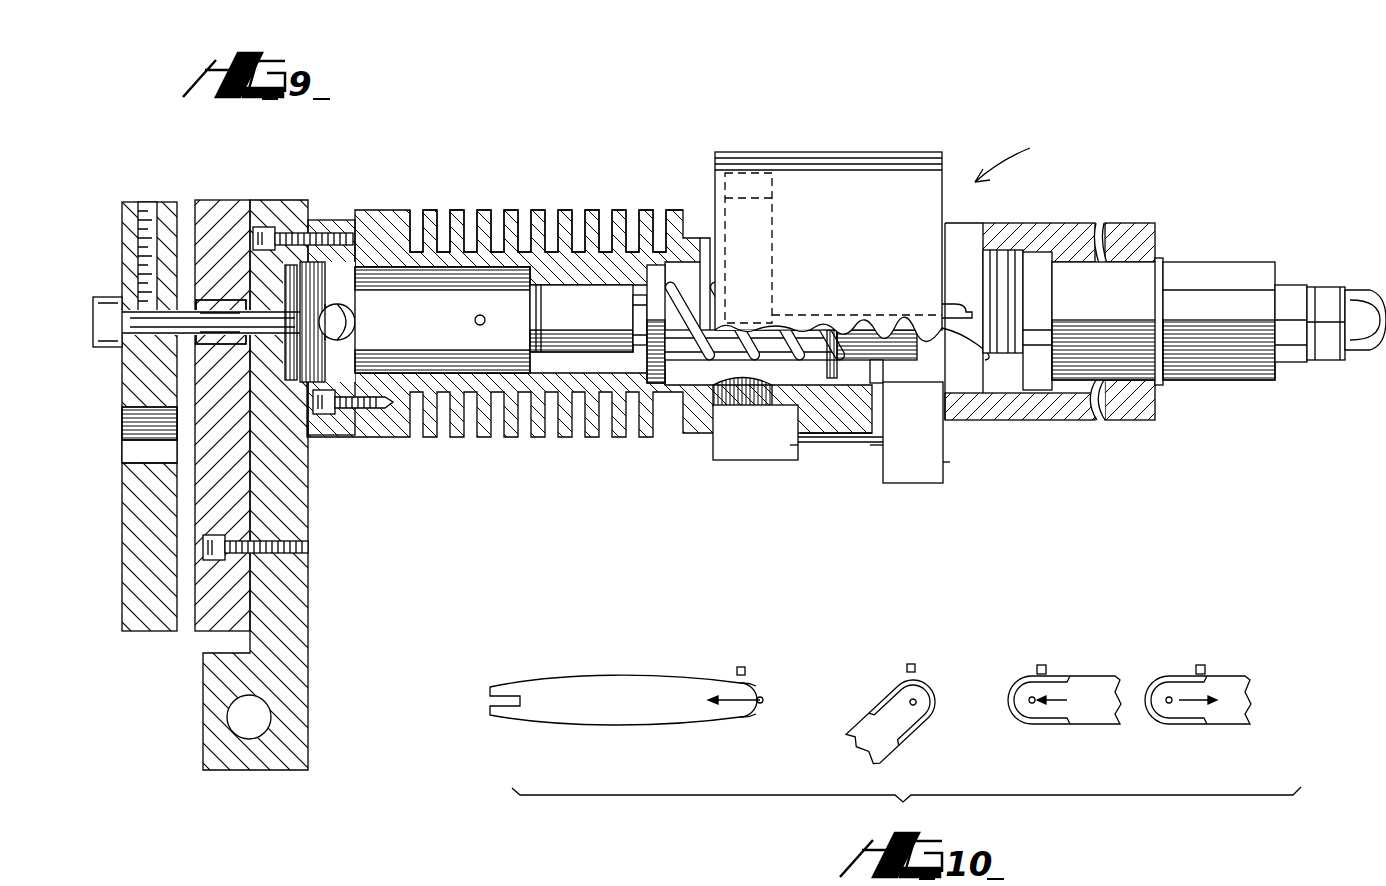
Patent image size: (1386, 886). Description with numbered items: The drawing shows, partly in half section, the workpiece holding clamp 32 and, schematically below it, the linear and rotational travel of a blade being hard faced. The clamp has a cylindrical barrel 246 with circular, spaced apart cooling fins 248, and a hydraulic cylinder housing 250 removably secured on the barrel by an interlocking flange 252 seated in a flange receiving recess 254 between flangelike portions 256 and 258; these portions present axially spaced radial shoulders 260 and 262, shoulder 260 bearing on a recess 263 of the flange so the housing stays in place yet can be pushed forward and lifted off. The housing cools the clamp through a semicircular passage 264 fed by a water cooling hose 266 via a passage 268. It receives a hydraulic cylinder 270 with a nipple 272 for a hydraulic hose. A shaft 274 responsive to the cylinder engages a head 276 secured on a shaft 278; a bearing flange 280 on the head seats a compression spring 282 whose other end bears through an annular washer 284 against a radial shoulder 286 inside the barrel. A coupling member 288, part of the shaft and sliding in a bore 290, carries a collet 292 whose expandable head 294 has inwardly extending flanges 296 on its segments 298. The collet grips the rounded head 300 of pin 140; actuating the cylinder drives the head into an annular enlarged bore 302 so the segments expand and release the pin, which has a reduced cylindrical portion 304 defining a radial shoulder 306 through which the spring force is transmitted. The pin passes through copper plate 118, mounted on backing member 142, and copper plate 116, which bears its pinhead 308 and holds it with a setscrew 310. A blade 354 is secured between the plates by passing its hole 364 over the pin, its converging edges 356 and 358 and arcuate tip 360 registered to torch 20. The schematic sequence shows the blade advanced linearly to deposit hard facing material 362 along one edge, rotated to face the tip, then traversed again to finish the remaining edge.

In FIG. 9, the clamp 32 is at (1018, 157).
In FIG. 9, the copper plate 116 is at (140, 640).
In FIG. 9, the copper plate 118 is at (205, 638).
In FIG. 9, the pin 140 is at (216, 336).
In FIG. 9, the backing member 142 is at (300, 676).
In FIG. 9, the cylindrical barrel 246 is at (390, 212).
In FIG. 9, the cooling fins 248 is at (478, 210).
In FIG. 9, the hydraulic cylinder housing 250 is at (998, 224).
In FIG. 9, the interlocking flange 252 is at (832, 435).
In FIG. 9, the flange receiving recess 254 is at (872, 447).
In FIG. 9, the flangelike portion 256 is at (718, 440).
In FIG. 9, the flangelike portion 258 is at (945, 465).
In FIG. 9, the radial shoulder 260 is at (806, 444).
In FIG. 9, the radial shoulder 262 is at (890, 470).
In FIG. 9, the recess 263 is at (790, 448).
In FIG. 9, the semicircular passage 264 is at (775, 203).
In FIG. 9, the water cooling hose 266 is at (955, 308).
In FIG. 9, the passage 268 is at (838, 322).
In FIG. 9, the hydraulic cylinder 270 is at (1232, 314).
In FIG. 9, the nipple 272 is at (1310, 288).
In FIG. 9, the shaft 274 is at (992, 356).
In FIG. 9, the head 276 is at (904, 352).
In FIG. 9, the shaft 278 is at (800, 362).
In FIG. 9, the bearing flange 280 is at (878, 383).
In FIG. 9, the compression spring 282 is at (748, 398).
In FIG. 9, the annular washer 284 is at (648, 370).
In FIG. 9, the radial shoulder 286 is at (672, 428).
In FIG. 9, the coupling member 288 is at (588, 310).
In FIG. 9, the bore 290 is at (638, 328).
In FIG. 9, the collet 292 is at (448, 342).
In FIG. 9, the expandable head 294 is at (345, 268).
In FIG. 9, the inwardly extending flanges 296 is at (221, 310).
In FIG. 9, the segments 298 is at (360, 350).
In FIG. 9, the head 300 is at (372, 334).
In FIG. 9, the annular enlarged bore 302 is at (309, 432).
In FIG. 9, the cylindrical portion 304 is at (292, 345).
In FIG. 9, the radial shoulder 306 is at (360, 318).
In FIG. 9, the pinhead 308 is at (118, 298).
In FIG. 9, the setscrew 310 is at (148, 204).
In FIG. 10, the torch 20 is at (738, 667).
In FIG. 10, the blade 354 is at (644, 676).
In FIG. 10, the edge 356 is at (762, 688).
In FIG. 10, the edge 358 is at (756, 720).
In FIG. 10, the tip 360 is at (777, 700).
In FIG. 10, the hard facing material 362 is at (885, 697).
In FIG. 10, the hole 364 is at (764, 708).